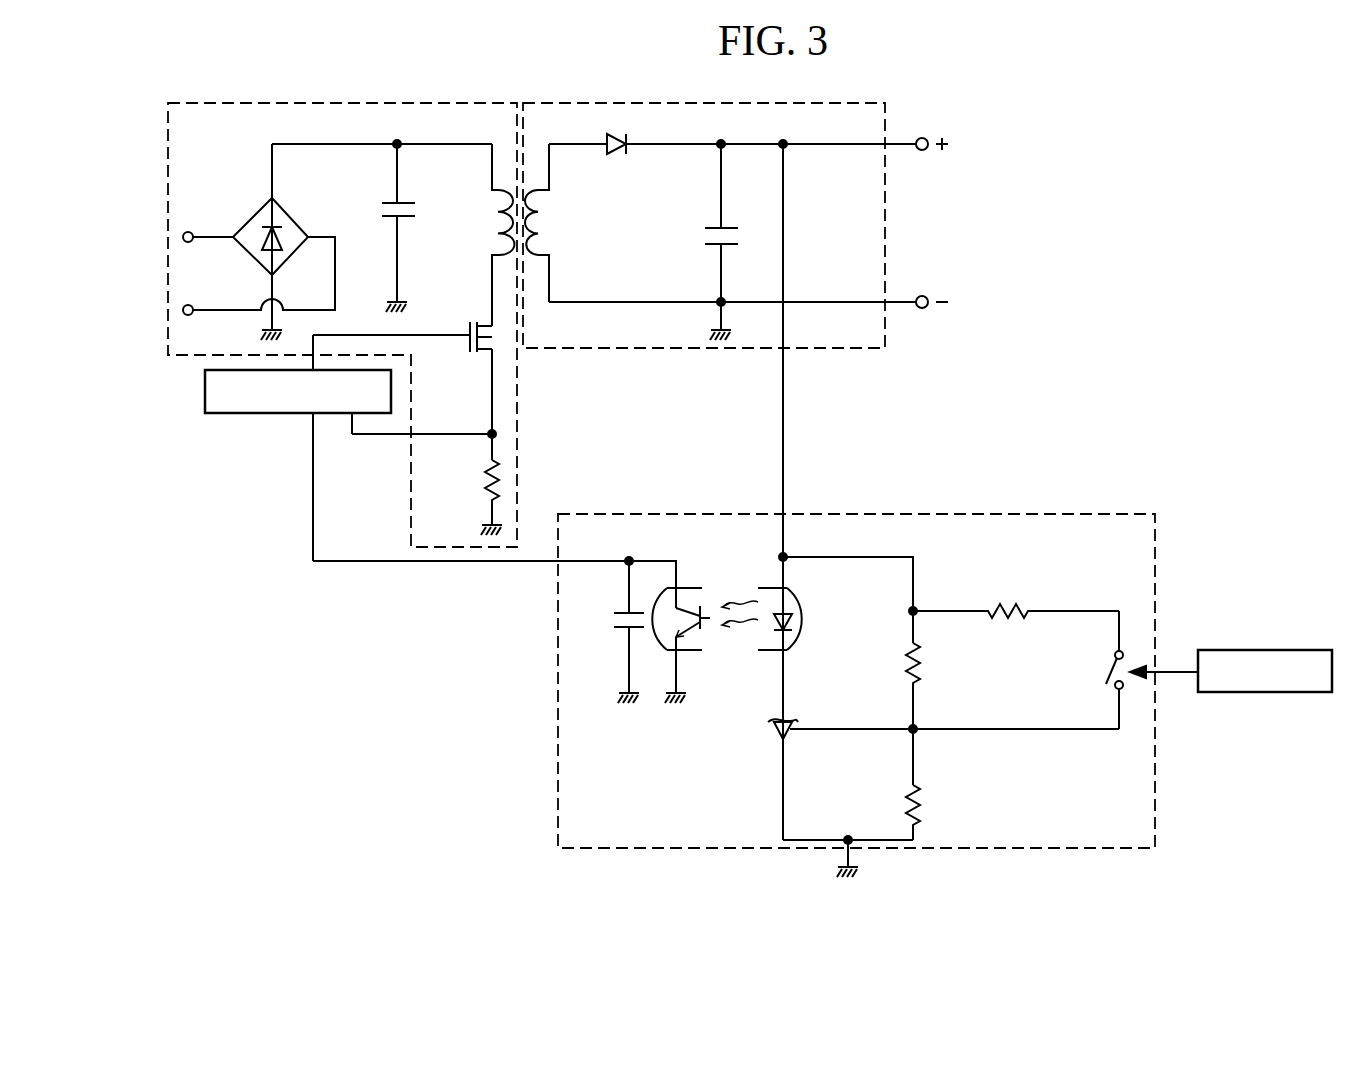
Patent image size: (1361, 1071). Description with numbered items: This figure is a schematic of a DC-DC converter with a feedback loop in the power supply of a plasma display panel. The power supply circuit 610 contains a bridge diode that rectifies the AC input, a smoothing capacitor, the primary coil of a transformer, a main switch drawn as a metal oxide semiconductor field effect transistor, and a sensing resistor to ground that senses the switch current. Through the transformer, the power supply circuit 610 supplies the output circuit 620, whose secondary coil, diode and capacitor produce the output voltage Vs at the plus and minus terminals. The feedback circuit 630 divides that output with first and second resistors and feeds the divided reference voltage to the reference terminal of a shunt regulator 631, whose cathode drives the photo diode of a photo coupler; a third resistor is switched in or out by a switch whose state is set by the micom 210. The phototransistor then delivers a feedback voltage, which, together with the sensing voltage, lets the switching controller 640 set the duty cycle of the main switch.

The power supply circuit 610 is at (517, 386).
The output circuit 620 is at (822, 348).
The feedback circuit 630 is at (734, 670).
The shunt regulator 631 is at (773, 739).
The switching controller 640 is at (205, 392).
The microcomputer (micom) 210 is at (1301, 648).